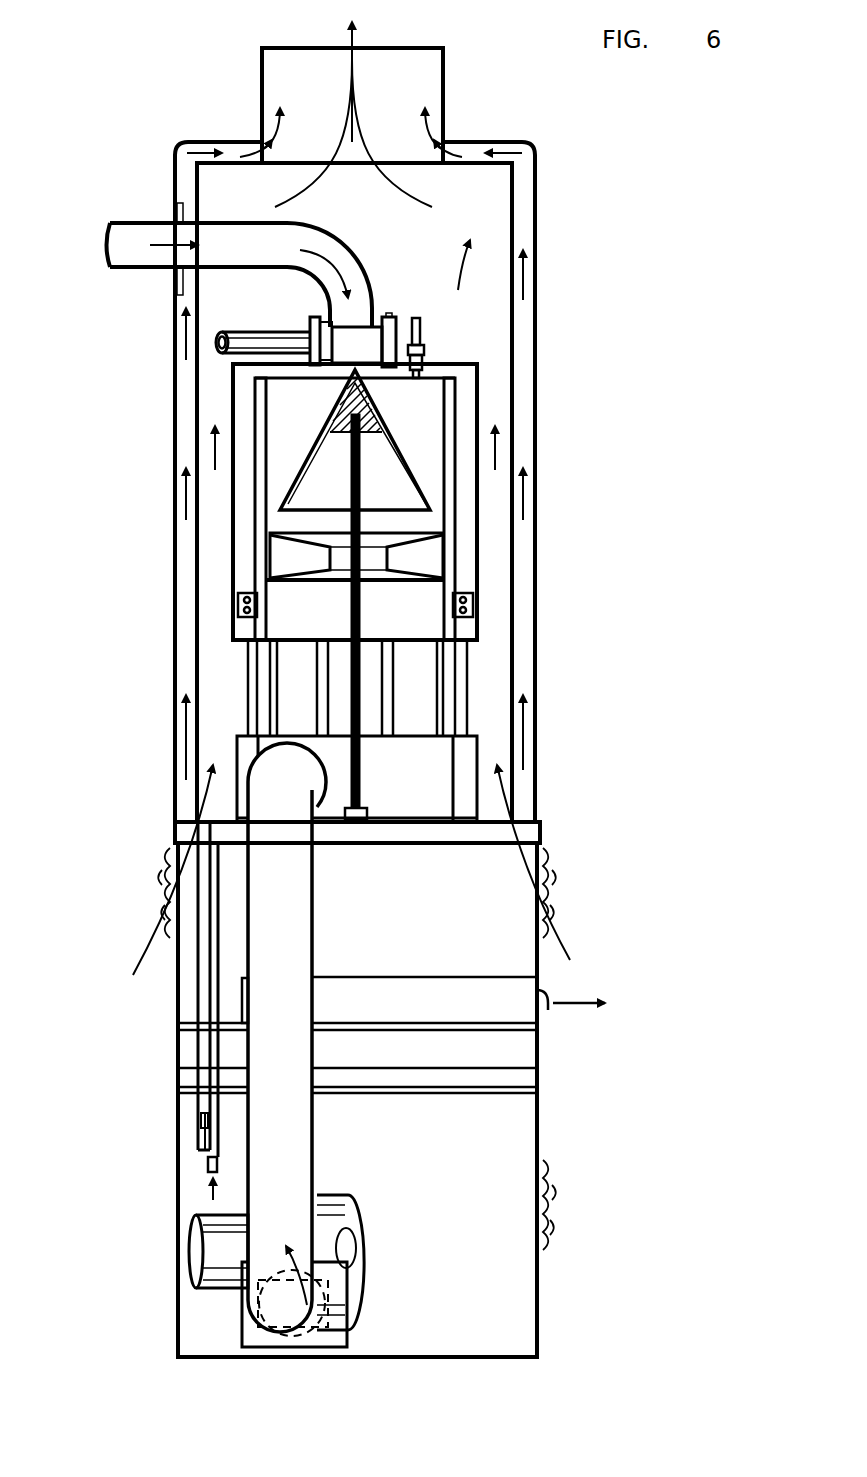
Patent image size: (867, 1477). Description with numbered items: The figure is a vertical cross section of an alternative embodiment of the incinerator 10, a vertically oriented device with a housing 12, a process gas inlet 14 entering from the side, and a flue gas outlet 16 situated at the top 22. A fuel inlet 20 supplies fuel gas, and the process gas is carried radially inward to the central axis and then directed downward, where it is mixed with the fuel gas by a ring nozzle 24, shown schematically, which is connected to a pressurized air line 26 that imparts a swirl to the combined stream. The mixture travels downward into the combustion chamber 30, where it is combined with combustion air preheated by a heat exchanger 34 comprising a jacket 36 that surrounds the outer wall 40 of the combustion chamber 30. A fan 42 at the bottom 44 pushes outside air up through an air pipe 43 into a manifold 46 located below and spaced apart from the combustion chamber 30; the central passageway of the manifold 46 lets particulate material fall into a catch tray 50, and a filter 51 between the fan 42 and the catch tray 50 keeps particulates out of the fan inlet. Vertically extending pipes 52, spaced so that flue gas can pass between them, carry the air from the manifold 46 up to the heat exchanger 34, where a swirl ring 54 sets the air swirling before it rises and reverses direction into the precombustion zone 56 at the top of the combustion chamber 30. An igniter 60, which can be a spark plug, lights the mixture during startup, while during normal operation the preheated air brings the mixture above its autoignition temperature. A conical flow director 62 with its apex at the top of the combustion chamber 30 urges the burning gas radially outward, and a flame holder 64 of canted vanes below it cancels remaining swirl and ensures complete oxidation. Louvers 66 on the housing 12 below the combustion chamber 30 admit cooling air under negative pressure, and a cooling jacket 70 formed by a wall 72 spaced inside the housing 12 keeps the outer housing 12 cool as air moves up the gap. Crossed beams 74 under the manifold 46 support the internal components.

The incinerator 10 is at (478, 93).
The housing 12 is at (197, 142).
The process gas inlet 14 is at (162, 280).
The flue gas outlet 16 is at (387, 52).
The fuel inlet 20 is at (262, 336).
The top 22 is at (218, 140).
The ring nozzle 24 is at (311, 318).
The pressurized air line 26 is at (255, 332).
The combustion chamber 30 is at (280, 517).
The heat exchanger 34 is at (486, 388).
The jacket 36 is at (480, 410).
The outer wall 40 is at (262, 455).
The fan 42 is at (363, 1240).
The air pipe 43 is at (260, 1070).
The bottom 44 is at (425, 1357).
The manifold 46 is at (470, 765).
The catch tray 50 is at (510, 1000).
The filter 51 is at (513, 1078).
The pipes 52 is at (247, 682).
The swirl ring 54 is at (238, 600).
The precombustion zone 56 is at (277, 403).
The igniter 60 is at (420, 322).
The flow director 62 is at (383, 427).
The flame holder 64 is at (423, 563).
The louvers 66 is at (168, 912).
The cooling jacket 70 is at (185, 510).
The cooling jacket wall 72 is at (195, 440).
The crossed beams 74 is at (178, 830).